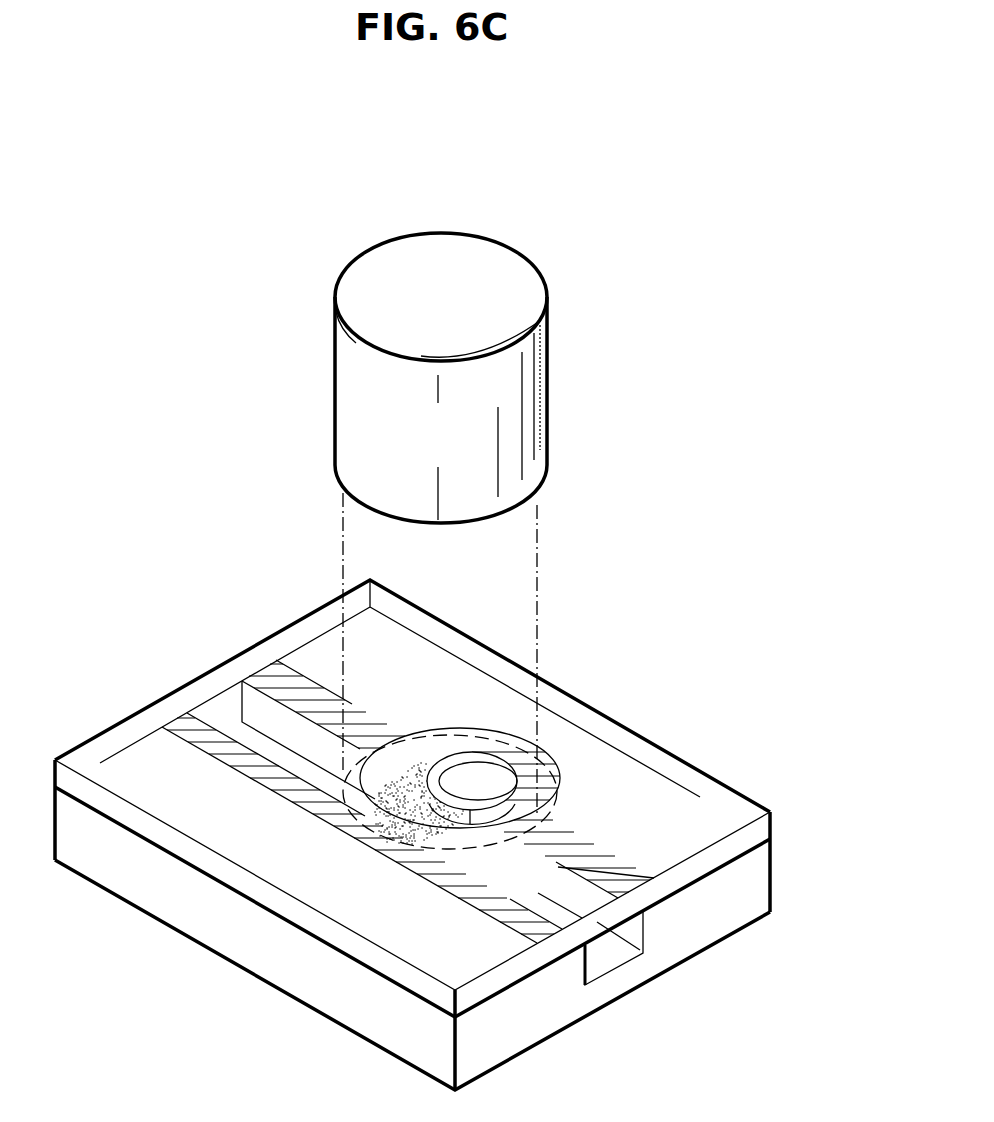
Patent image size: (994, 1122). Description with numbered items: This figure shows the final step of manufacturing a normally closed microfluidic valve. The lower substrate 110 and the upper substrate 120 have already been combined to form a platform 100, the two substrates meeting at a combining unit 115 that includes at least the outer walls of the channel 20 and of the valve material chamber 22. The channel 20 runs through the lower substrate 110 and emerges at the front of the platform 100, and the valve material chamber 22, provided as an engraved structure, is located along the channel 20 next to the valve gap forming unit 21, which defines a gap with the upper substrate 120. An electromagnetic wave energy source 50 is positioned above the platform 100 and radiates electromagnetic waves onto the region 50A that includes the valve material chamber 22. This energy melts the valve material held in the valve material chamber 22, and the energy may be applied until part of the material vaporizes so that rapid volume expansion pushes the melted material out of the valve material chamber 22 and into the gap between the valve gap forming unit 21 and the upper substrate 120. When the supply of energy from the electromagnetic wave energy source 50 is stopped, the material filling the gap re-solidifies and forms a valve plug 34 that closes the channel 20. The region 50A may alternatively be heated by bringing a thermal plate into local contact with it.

The electromagnetic wave energy source 50 is at (548, 393).
The region 50A is at (393, 747).
The combining unit 115 is at (272, 686).
The valve plug 34 is at (430, 793).
The valve material chamber 22 is at (482, 780).
The valve gap forming unit 21 is at (473, 837).
The upper substrate 120 is at (772, 826).
The lower substrate 110 is at (772, 880).
The platform 100 is at (868, 812).
The channel 20 is at (603, 957).